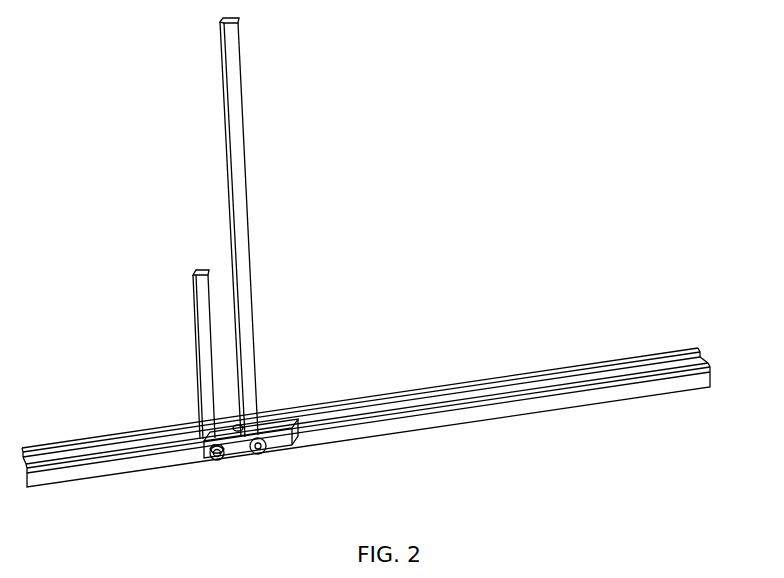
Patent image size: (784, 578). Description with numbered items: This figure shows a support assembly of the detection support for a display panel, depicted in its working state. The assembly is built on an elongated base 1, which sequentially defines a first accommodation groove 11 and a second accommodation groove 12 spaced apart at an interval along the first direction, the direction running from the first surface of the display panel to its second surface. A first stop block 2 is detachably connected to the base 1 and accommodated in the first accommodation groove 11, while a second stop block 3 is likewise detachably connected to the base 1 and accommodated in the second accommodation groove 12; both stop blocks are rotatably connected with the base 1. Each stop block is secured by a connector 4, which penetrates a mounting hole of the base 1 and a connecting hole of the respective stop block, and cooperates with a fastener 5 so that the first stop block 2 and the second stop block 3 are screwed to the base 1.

The base 1 is at (366, 413).
The first accommodation groove 11 is at (121, 441).
The second accommodation groove 12 is at (382, 401).
The first stop block 2 is at (207, 345).
The second stop block 3 is at (251, 271).
The connector 4 is at (226, 460).
The fastener 5 is at (216, 461).